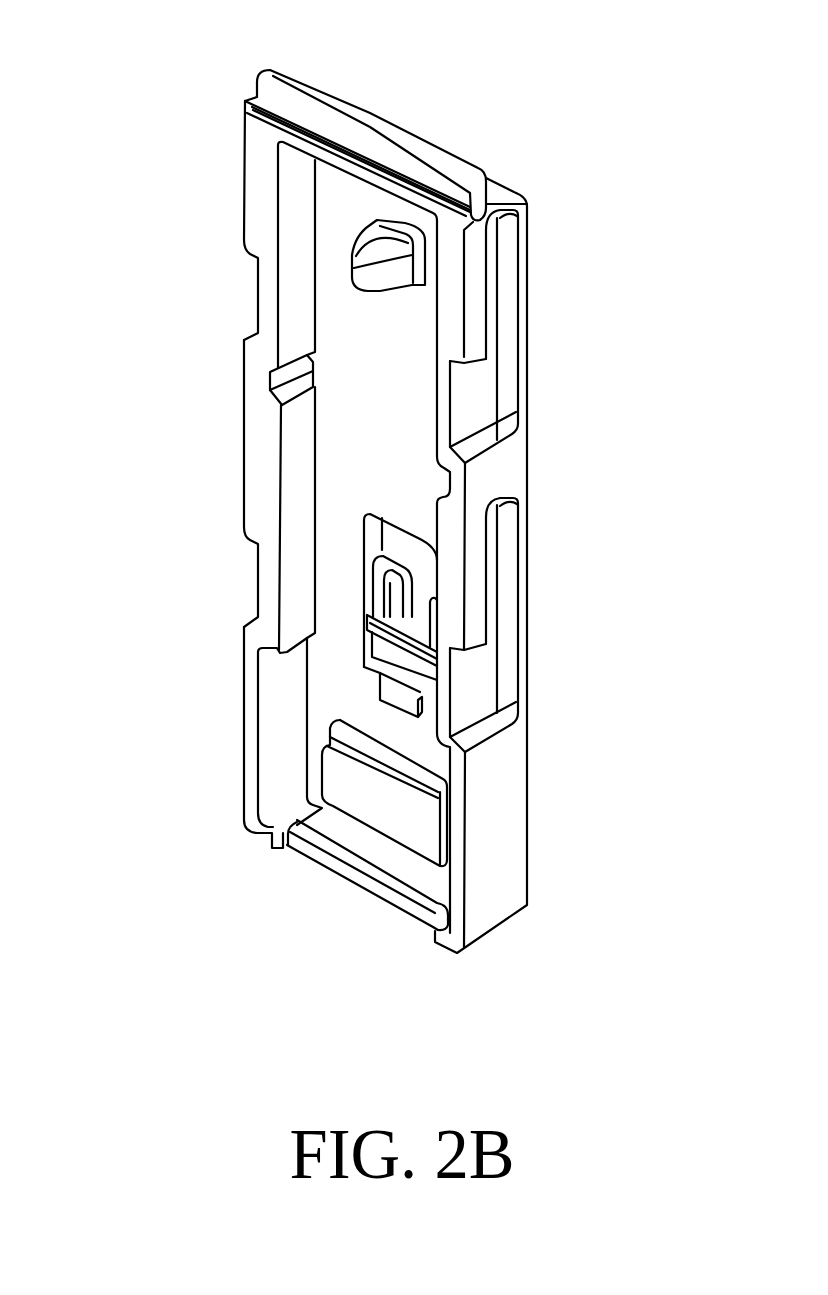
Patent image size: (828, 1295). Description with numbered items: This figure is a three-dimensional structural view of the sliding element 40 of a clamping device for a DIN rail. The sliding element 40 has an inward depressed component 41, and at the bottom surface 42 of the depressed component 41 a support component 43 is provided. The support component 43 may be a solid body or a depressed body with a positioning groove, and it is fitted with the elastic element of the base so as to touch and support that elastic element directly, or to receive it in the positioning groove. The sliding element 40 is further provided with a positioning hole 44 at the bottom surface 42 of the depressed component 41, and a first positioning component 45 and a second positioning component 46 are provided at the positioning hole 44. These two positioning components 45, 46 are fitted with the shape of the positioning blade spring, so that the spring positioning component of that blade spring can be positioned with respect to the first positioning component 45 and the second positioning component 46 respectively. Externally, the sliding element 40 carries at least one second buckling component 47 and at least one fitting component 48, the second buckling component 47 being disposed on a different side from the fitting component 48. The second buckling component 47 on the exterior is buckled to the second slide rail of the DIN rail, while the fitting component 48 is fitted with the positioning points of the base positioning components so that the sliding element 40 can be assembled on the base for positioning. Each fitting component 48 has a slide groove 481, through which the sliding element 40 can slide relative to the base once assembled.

The sliding element 40 is at (497, 893).
The depressed component 41 is at (280, 746).
The bottom surface 42 is at (420, 344).
The support component 43 is at (368, 251).
The positioning hole 44 is at (378, 550).
The first positioning component 45 is at (408, 635).
The second positioning component 46 is at (408, 687).
The second buckling component 47 is at (348, 150).
The fitting component 48 is at (250, 297).
The slide groove 481 is at (495, 300).